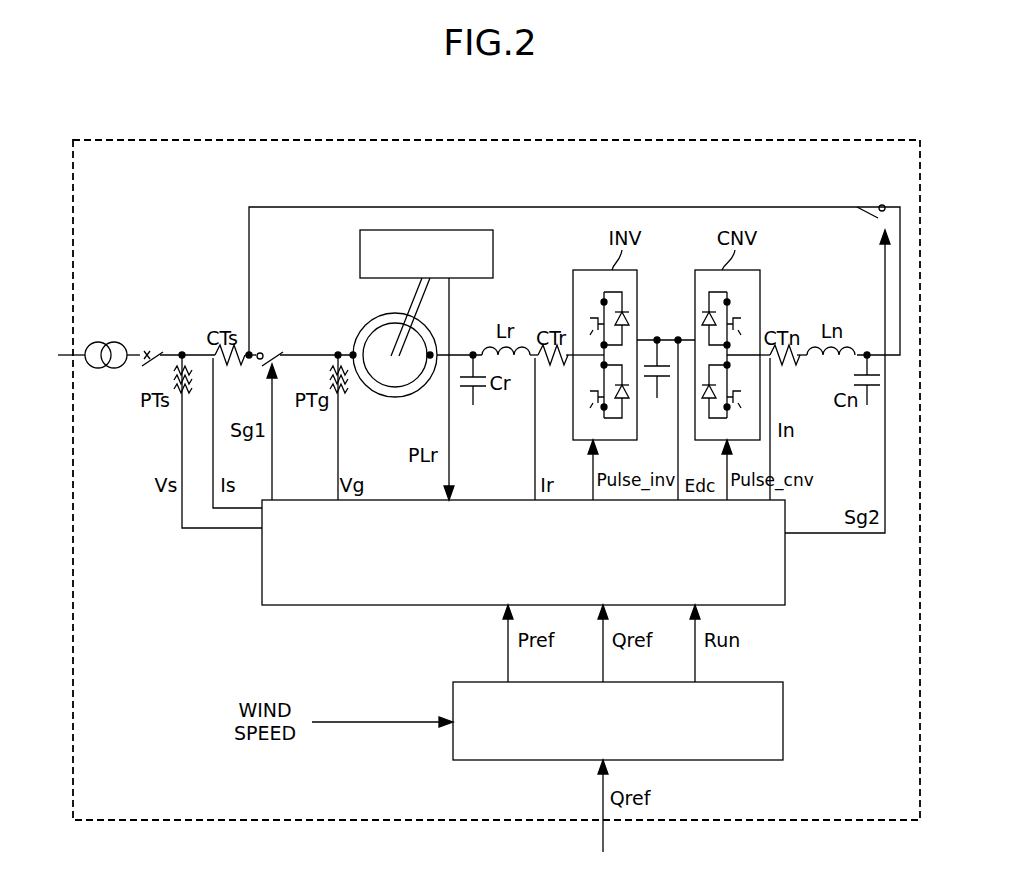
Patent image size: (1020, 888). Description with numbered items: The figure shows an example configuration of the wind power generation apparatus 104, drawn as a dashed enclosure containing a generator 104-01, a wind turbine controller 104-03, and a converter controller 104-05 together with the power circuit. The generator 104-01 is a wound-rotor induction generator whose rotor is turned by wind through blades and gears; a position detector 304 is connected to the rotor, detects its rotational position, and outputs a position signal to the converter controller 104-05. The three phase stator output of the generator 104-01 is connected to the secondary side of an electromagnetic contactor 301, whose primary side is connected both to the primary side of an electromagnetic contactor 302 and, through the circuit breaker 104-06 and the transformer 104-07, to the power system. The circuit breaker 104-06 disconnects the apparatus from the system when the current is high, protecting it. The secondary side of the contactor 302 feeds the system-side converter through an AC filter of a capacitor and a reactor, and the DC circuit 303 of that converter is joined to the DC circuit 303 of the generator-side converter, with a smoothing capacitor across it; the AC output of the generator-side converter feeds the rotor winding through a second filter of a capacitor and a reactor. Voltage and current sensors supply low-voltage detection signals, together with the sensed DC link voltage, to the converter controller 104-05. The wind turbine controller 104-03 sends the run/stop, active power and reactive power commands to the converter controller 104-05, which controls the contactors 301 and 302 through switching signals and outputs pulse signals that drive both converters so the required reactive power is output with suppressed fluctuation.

The wind power generation apparatus 104 is at (716, 140).
The transformer 104-07 is at (107, 342).
The circuit breaker 104-06 is at (155, 350).
The generator 104-01 is at (376, 318).
The converter controller 104-05 is at (785, 582).
The wind turbine controller 104-03 is at (783, 720).
The electromagnetic contactor 301 is at (272, 350).
The electromagnetic contactor 302 is at (870, 202).
The DC circuit 303 is at (657, 337).
The position detector 304 is at (496, 265).